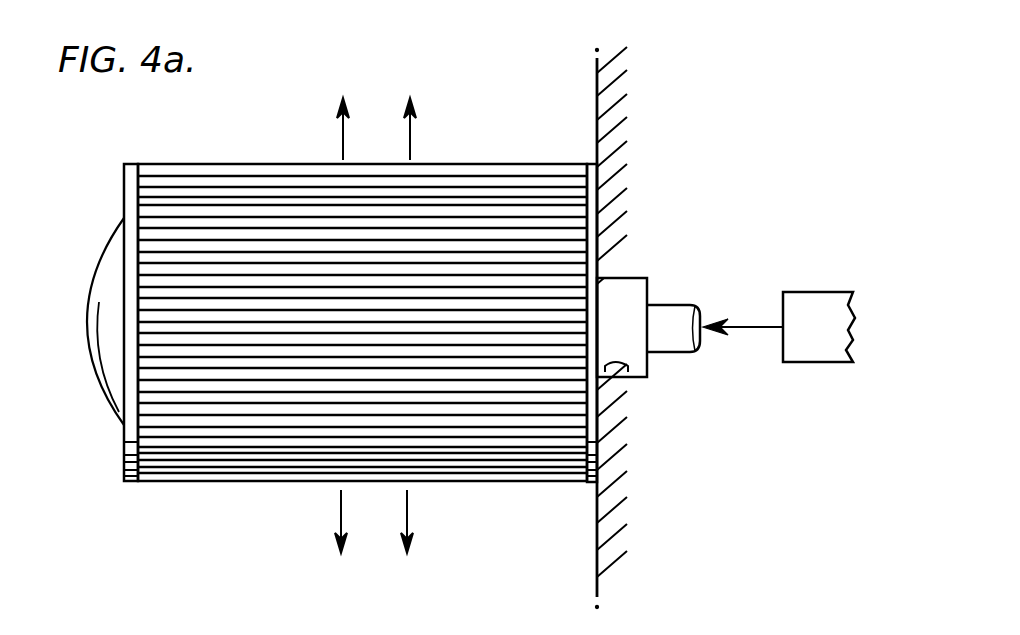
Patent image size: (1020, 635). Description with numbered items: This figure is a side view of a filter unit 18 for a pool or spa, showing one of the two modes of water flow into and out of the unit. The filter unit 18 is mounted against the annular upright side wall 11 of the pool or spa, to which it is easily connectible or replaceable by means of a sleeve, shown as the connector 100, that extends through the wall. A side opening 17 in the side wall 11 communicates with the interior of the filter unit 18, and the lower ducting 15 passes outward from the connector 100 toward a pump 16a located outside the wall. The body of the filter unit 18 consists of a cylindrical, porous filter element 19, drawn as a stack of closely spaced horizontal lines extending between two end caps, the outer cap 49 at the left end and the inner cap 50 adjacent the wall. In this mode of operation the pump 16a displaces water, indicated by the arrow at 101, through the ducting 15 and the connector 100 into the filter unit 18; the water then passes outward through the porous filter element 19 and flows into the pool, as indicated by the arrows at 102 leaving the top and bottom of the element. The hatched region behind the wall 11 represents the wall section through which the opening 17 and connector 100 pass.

The side wall 11 is at (604, 513).
The lower ducting 15 is at (670, 325).
The pump 16a is at (833, 346).
The side opening 17 is at (625, 370).
The filter unit 18 is at (477, 145).
The filter element 19 is at (228, 433).
The left end cap 49 is at (130, 388).
The right end cap 50 is at (590, 440).
The sleeve 100 is at (632, 278).
The water displacement 101 is at (760, 327).
The flow into pool 102 is at (409, 510).